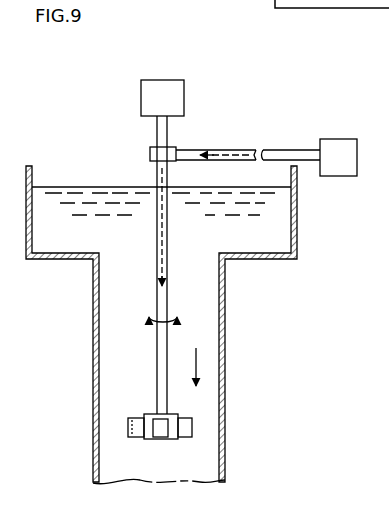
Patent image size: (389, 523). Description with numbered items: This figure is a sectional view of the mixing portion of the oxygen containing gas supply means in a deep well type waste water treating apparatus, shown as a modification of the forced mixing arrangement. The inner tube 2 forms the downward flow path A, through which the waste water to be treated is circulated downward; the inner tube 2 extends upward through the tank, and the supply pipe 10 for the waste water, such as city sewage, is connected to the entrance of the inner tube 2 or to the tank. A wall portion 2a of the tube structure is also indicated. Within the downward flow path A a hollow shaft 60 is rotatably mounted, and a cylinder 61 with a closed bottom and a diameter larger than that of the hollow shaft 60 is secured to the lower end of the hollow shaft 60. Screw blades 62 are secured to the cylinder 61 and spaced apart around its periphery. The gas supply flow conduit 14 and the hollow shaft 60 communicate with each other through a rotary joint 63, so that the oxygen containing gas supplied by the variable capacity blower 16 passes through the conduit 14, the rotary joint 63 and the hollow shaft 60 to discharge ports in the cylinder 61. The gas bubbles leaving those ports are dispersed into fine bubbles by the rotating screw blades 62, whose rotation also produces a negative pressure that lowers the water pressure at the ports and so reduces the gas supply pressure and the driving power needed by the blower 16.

The inner tube 2 is at (93, 342).
The tank wall 2a is at (297, 227).
The supply pipe 10 is at (125, 428).
The gas supply flow conduit 14 is at (254, 150).
The variable capacity blower 16 is at (334, 139).
The hollow shaft 60 is at (168, 299).
The cylinder 61 is at (152, 414).
The screw blades 62 is at (163, 437).
The rotary joint 63 is at (150, 150).
The downward flow path A is at (200, 370).